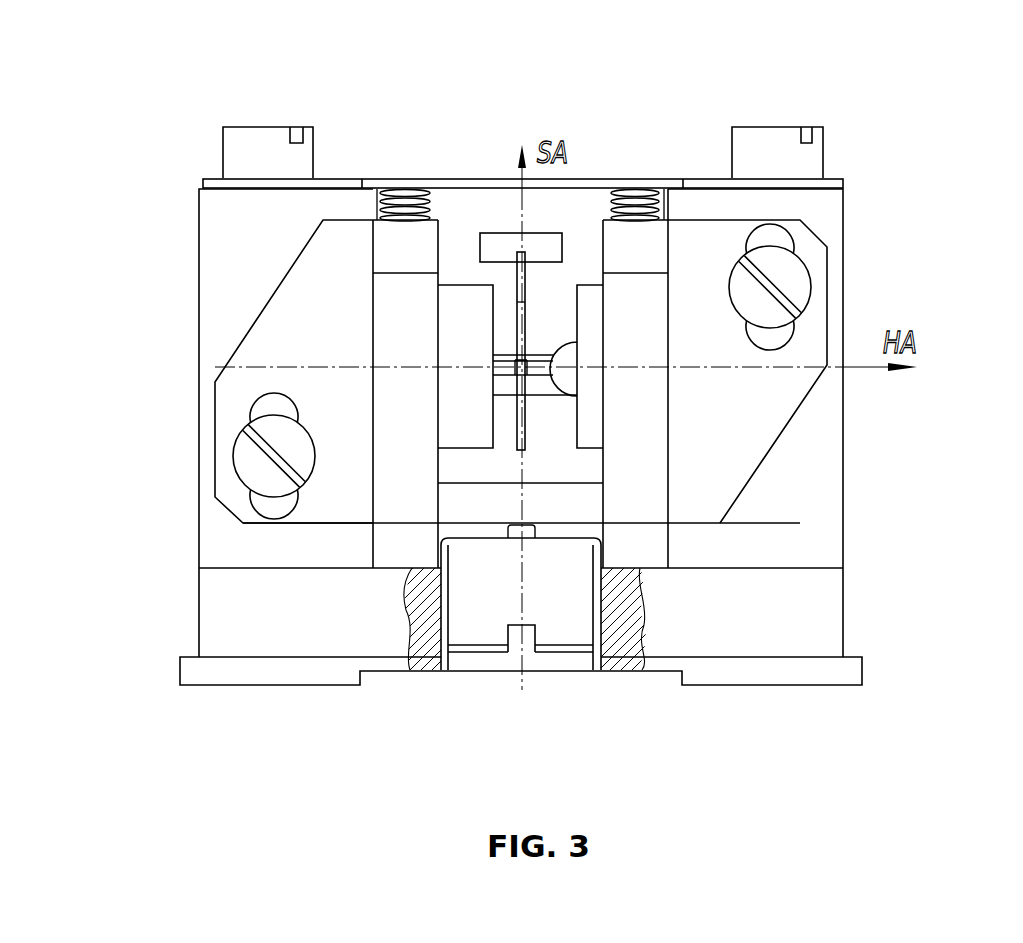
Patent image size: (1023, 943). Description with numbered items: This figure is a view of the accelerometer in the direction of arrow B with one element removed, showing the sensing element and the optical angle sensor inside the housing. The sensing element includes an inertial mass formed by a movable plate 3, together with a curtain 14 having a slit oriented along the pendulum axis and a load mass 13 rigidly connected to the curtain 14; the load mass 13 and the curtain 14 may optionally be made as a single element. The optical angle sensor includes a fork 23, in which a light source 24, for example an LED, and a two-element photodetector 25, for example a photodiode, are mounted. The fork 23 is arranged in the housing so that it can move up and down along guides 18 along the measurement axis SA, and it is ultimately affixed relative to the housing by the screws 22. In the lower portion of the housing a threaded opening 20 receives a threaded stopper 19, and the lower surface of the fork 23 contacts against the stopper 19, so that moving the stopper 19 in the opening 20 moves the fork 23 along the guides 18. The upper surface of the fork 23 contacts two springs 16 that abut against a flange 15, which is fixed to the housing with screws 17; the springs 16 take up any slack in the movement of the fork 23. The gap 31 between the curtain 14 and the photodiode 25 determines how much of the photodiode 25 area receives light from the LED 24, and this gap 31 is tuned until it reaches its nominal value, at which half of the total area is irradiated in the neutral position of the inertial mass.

The movable plate 3 is at (533, 368).
The load mass 13 is at (498, 247).
The curtain 14 is at (522, 300).
The flange 15 is at (708, 180).
The springs 16 is at (645, 200).
The screws 17 is at (801, 158).
The guides 18 is at (265, 250).
The threaded stopper 19 is at (490, 597).
The threaded opening 20 is at (597, 657).
The screws 22 is at (252, 457).
The fork 23 is at (643, 399).
The light source 24 is at (588, 385).
The two-element photodetector 25 is at (478, 385).
The gap 31 is at (505, 428).